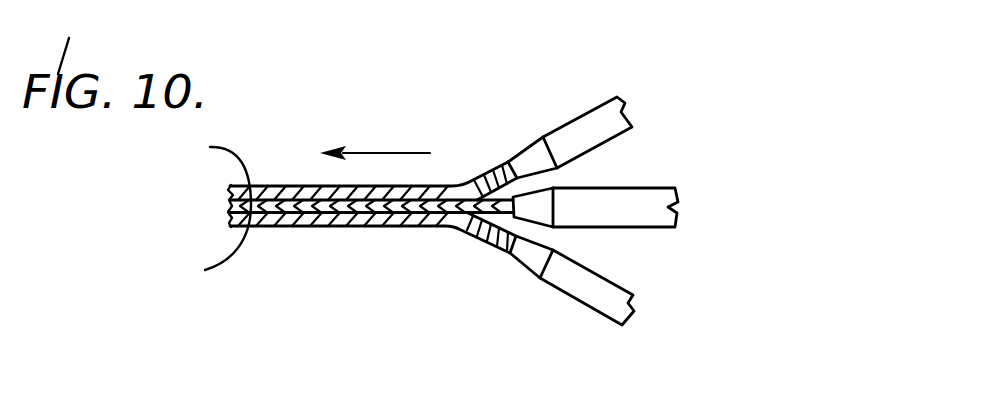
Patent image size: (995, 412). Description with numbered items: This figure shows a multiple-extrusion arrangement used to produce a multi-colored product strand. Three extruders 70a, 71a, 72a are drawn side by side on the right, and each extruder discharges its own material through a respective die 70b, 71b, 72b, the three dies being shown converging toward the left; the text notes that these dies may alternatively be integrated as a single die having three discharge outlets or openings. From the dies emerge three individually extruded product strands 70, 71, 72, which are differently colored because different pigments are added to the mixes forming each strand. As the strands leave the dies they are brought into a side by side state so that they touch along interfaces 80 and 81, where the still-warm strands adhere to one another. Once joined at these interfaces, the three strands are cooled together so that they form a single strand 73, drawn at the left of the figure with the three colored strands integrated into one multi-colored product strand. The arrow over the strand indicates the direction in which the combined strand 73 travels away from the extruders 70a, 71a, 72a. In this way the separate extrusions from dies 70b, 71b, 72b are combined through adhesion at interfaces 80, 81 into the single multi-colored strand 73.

The product strand 70 is at (297, 186).
The extruder 70a is at (615, 113).
The die 70b is at (510, 152).
The product strand 71 is at (287, 203).
The extruder 71a is at (678, 203).
The die 71b is at (540, 207).
The product strand 72 is at (379, 218).
The extruder 72a is at (622, 293).
The die 72b is at (528, 257).
The single strand 73 is at (285, 203).
The interface 80 is at (210, 147).
The interface 81 is at (205, 270).